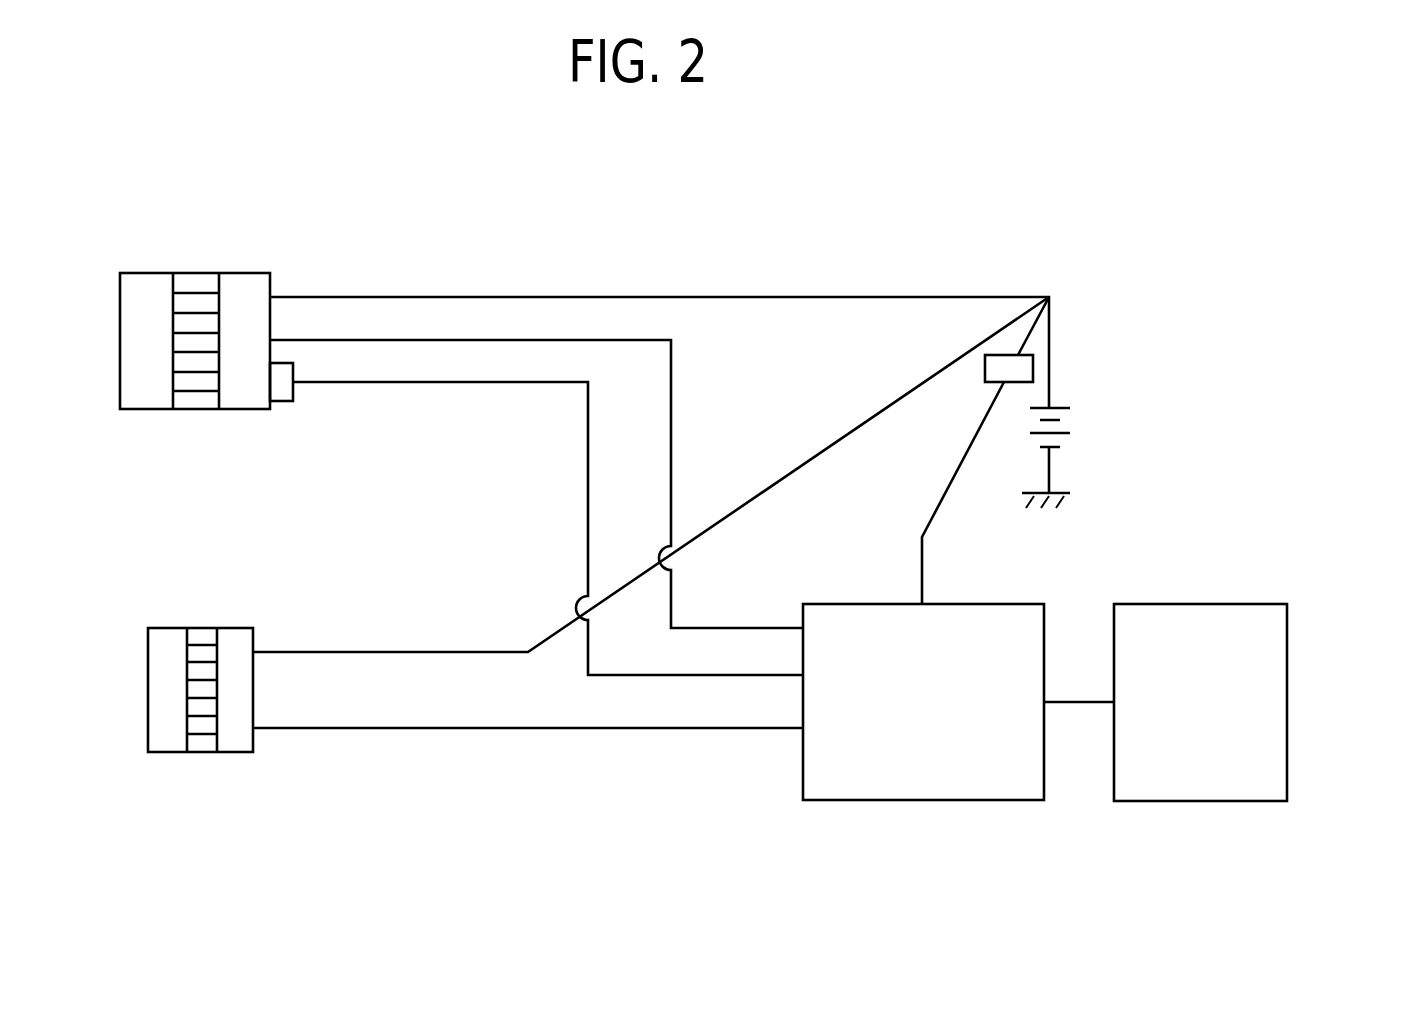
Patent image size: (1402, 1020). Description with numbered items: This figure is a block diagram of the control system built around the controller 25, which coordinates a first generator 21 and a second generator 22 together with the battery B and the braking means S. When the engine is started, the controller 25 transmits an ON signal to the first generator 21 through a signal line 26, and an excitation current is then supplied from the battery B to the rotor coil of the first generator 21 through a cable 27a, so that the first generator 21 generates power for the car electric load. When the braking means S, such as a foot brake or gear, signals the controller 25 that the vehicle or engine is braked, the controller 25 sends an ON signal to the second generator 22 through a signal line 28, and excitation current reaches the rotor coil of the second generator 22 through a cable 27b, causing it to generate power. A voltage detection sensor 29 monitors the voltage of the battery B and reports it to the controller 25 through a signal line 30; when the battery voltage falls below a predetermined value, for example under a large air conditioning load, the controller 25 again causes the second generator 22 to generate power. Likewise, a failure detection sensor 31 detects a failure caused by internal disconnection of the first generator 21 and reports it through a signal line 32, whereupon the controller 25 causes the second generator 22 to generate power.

The first generator 21 is at (247, 272).
The second generator 22 is at (237, 628).
The controller 25 is at (903, 801).
The signal line 26 is at (671, 422).
The cable 27a is at (812, 296).
The cable 27b is at (850, 428).
The signal line 28 is at (570, 730).
The voltage detection sensor 29 is at (983, 363).
The signal line 30 is at (922, 550).
The failure detection sensor 31 is at (282, 403).
The signal line 32 is at (505, 383).
The battery B is at (1082, 423).
The braking means S is at (1287, 655).